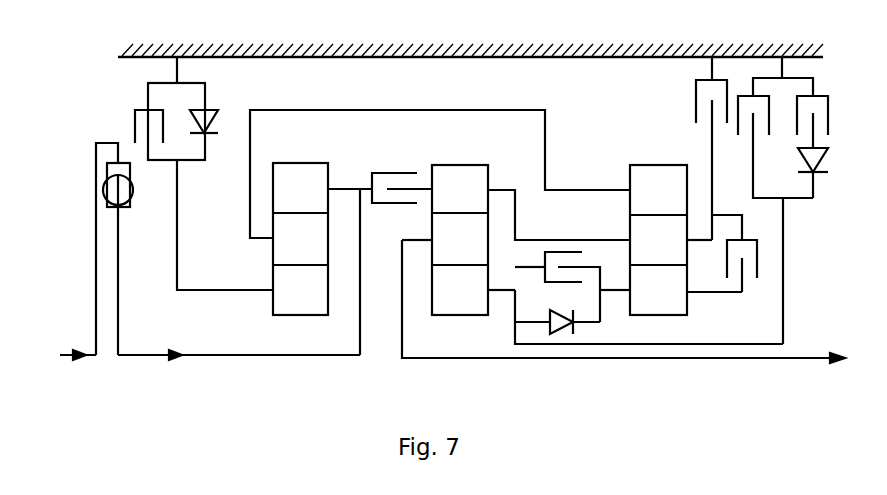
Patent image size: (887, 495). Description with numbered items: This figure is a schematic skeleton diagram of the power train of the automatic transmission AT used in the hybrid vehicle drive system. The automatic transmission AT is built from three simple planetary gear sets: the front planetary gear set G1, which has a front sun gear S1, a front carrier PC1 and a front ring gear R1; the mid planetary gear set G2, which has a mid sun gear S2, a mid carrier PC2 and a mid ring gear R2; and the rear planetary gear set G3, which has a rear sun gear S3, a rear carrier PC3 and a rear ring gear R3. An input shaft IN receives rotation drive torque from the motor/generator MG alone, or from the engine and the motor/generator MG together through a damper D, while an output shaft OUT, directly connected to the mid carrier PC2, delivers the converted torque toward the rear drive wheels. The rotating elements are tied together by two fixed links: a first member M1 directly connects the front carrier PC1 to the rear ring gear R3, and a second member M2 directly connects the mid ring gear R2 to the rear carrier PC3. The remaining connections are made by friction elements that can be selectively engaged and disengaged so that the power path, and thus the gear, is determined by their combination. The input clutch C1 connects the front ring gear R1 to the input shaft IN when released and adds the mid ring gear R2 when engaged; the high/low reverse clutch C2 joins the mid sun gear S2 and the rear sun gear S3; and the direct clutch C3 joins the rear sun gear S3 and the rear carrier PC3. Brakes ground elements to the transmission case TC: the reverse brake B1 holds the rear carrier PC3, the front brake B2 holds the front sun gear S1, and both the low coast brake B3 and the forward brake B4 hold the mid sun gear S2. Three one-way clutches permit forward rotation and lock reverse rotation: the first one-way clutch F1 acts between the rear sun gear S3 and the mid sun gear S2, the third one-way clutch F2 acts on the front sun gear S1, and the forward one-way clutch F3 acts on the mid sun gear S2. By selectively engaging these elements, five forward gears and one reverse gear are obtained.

The automatic transmission AT is at (140, 26).
The transmission case TC is at (422, 63).
The motor/generator MG is at (58, 355).
The input shaft IN is at (248, 355).
The output shaft OUT is at (787, 357).
The damper D is at (133, 195).
The reverse brake B1 is at (695, 148).
The front brake B2 is at (190, 173).
The low coast brake B3 is at (767, 200).
The forward brake B4 is at (829, 122).
The input clutch C1 is at (402, 175).
The high/low reverse clutch C2 is at (645, 293).
The direct clutch C3 is at (734, 266).
The first one-way clutch F1 is at (557, 315).
The third one-way clutch F2 is at (214, 108).
The forward one-way clutch F3 is at (829, 173).
The front planetary gear set G1 is at (320, 214).
The mid planetary gear set G2 is at (458, 216).
The rear planetary gear set G3 is at (677, 216).
The front ring gear R1 is at (322, 195).
The mid ring gear R2 is at (460, 195).
The rear ring gear R3 is at (658, 196).
The front carrier PC1 is at (300, 247).
The mid carrier PC2 is at (445, 247).
The rear carrier PC3 is at (671, 247).
The front sun gear S1 is at (301, 292).
The mid sun gear S2 is at (480, 292).
The rear sun gear S3 is at (693, 292).
The first member M1 is at (378, 109).
The second member M2 is at (505, 189).